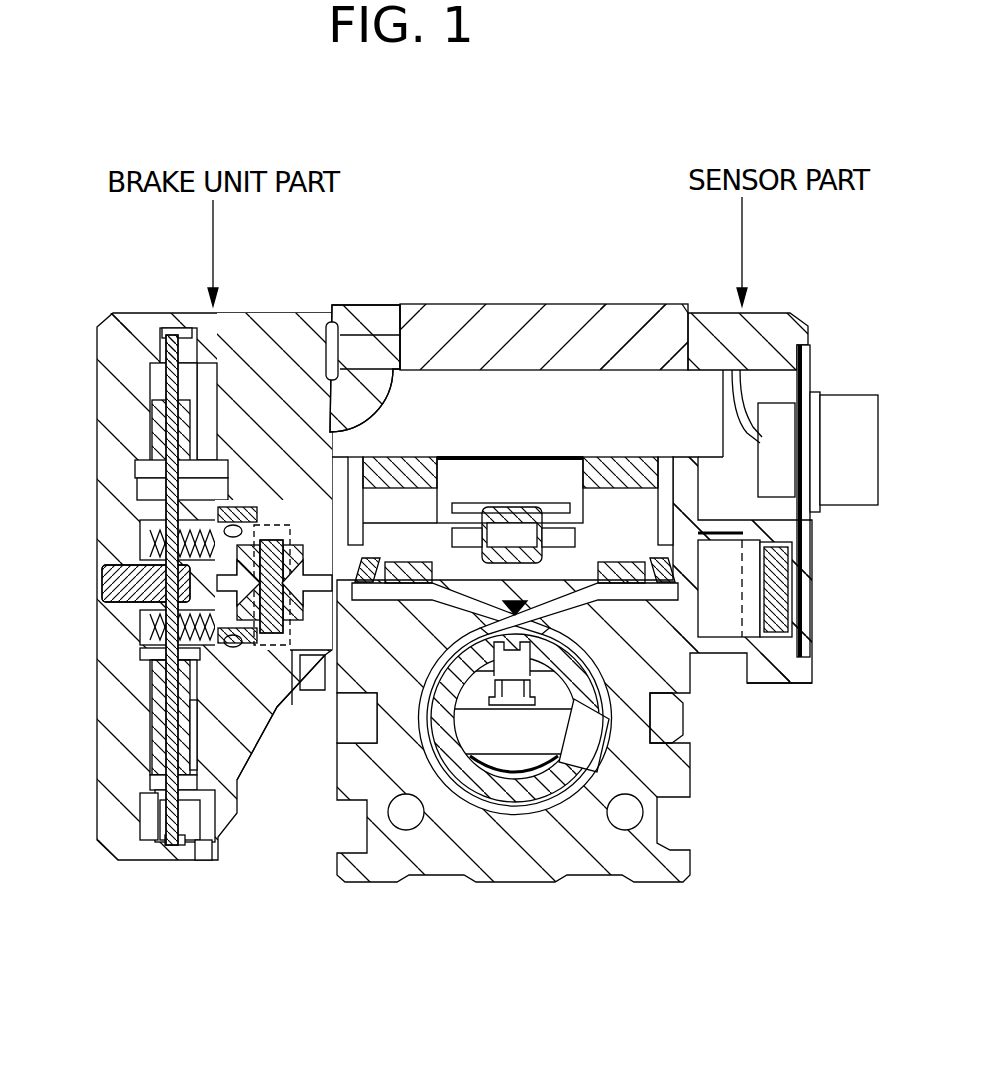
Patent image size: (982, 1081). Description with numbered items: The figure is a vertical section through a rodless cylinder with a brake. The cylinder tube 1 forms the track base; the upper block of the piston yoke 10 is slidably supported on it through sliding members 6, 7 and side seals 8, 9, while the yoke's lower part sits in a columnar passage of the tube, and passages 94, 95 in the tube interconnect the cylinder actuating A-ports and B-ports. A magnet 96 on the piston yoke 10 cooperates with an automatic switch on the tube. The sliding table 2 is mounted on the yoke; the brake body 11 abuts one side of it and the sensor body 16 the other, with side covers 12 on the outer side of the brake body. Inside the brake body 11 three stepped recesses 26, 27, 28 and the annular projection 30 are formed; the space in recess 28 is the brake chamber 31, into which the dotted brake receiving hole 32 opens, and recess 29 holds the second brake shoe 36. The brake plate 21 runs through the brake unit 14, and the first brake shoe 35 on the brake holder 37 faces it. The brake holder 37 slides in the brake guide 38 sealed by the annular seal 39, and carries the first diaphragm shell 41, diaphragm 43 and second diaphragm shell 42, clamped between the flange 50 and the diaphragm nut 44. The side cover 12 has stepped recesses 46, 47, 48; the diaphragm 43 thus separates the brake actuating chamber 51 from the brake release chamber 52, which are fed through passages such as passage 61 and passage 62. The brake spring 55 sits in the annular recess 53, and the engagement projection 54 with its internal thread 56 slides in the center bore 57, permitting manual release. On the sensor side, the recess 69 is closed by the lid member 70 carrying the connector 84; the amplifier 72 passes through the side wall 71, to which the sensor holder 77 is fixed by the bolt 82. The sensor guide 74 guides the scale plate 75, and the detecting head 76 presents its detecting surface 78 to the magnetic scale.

The cylinder tube 1 is at (440, 850).
The sliding table 2 is at (553, 320).
The sliding member 6 is at (407, 510).
The sliding member 7 is at (615, 488).
The side seal 8 is at (360, 582).
The side seal 9 is at (655, 582).
The piston yoke 10 is at (420, 463).
The brake body 11 is at (262, 345).
The side cover 12 is at (103, 317).
The brake unit 14 is at (132, 537).
The sensor body 16 is at (790, 323).
The brake plate 21 is at (273, 713).
The disc-shaped recess 26 is at (176, 848).
The disc-shaped recess 27 is at (213, 457).
The disc-shaped recess 28 is at (278, 540).
The recess 29 is at (313, 537).
The annular projection 30 is at (172, 330).
The brake chamber 31 is at (287, 775).
The brake receiving hole 32 is at (262, 745).
The first brake shoe 35 is at (220, 743).
The second brake shoe 36 is at (357, 718).
The brake holder 37 is at (137, 515).
The brake guide 38 is at (240, 700).
The annular seal 39 is at (237, 517).
The first diaphragm shell 41 is at (135, 470).
The second diaphragm shell 42 is at (152, 430).
The diaphragm 43 is at (150, 378).
The diaphragm nut 44 is at (160, 775).
The disc-shaped recess 46 is at (150, 745).
The disc-shaped recess 47 is at (148, 805).
The disc-shaped recess 48 is at (208, 860).
The flange 50 is at (150, 705).
The brake actuating chamber 51 is at (108, 330).
The brake release chamber 52 is at (183, 330).
The annular recess 53 is at (150, 730).
The engagement projection 54 is at (112, 602).
The brake spring 55 is at (150, 677).
The internal thread 56 is at (140, 652).
The center bore 57 is at (140, 560).
The passage 61 is at (330, 320).
The passage 62 is at (397, 320).
The recess 69 is at (800, 370).
The lid member 70 is at (795, 617).
The side wall 71 is at (692, 623).
The amplifier 72 is at (627, 320).
The sensor guide 74 is at (790, 530).
The scale plate 75 is at (807, 657).
The detecting head 76 is at (718, 609).
The sensor holder 77 is at (762, 507).
The detecting surface 78 is at (790, 690).
The bolt 82 is at (697, 500).
The connector 84 is at (847, 407).
The passage 94 is at (623, 822).
The passage 95 is at (402, 820).
The magnet 96 is at (598, 747).